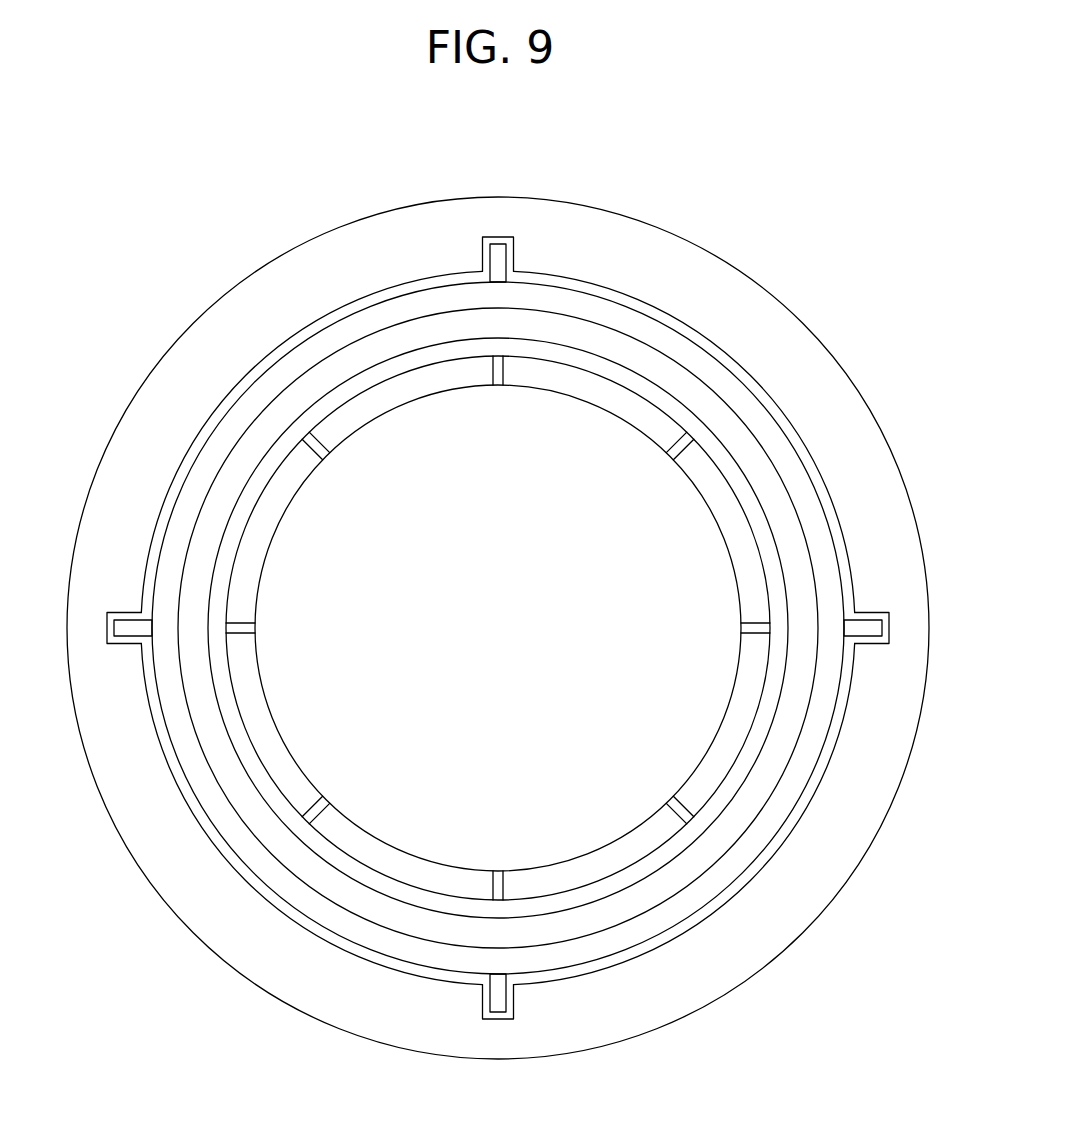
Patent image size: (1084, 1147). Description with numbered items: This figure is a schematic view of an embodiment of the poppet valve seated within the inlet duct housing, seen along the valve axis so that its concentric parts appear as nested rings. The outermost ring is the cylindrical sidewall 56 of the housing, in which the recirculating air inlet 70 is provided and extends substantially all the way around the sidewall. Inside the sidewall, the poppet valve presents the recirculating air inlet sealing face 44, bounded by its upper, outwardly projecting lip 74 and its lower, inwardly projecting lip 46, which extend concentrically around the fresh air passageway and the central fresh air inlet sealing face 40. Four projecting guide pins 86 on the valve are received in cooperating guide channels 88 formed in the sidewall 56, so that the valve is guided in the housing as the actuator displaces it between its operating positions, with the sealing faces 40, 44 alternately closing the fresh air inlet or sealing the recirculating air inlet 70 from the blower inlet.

The fresh air inlet sealing face 40 is at (527, 447).
The recirculating air inlet sealing face 44 is at (337, 368).
The lower lip 46 is at (253, 491).
The cylindrical sidewall 56 is at (185, 363).
The recirculating air inlet 70 is at (355, 843).
The upper, outwardly projecting lip 74 is at (185, 510).
The guide pins 86 is at (500, 260).
The guide channels 88 is at (485, 240).